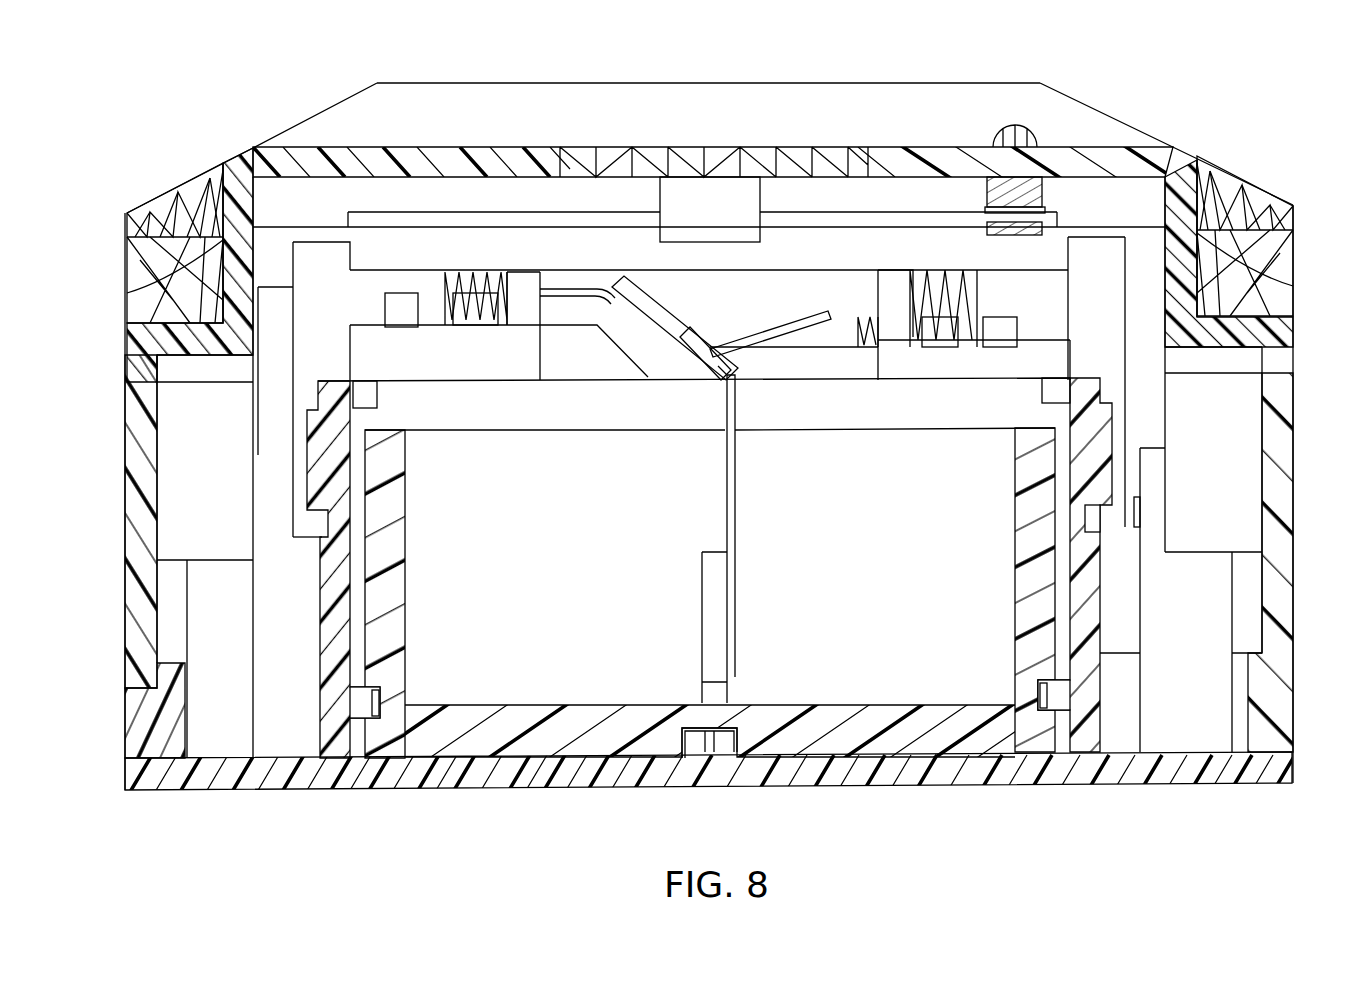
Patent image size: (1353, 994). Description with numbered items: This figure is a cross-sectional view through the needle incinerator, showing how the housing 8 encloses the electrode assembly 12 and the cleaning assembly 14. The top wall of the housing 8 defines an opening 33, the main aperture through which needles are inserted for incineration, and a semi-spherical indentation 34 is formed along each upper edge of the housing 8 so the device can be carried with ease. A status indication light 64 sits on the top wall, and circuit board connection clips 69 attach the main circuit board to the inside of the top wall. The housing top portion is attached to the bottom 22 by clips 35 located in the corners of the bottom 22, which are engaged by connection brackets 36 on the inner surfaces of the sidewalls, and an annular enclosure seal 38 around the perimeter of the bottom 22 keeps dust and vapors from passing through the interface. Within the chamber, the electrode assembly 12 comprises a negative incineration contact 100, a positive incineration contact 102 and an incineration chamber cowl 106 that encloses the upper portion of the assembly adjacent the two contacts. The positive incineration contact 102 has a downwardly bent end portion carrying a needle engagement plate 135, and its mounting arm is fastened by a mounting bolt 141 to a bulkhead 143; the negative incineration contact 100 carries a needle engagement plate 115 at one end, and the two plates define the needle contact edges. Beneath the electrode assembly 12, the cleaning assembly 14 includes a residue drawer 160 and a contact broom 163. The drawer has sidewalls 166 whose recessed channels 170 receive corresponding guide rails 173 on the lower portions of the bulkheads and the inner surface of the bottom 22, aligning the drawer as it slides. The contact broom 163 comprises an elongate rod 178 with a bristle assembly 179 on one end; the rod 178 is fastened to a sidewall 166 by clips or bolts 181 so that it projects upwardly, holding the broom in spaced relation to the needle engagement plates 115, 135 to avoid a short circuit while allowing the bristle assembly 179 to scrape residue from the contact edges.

The housing 8 is at (247, 157).
The opening 33 is at (787, 147).
The semi-spherical indentation 34 is at (1290, 176).
The status indication light 64 is at (1030, 137).
The circuit board connection clips 69 is at (762, 197).
The electrode assembly 12 is at (736, 286).
The bulkhead 143 is at (372, 340).
The incineration chamber cowl 106 is at (432, 276).
The mounting bolt 141 is at (480, 300).
The positive incineration contact 102 is at (610, 338).
The needle engagement plate 135 is at (643, 300).
The bristle assembly 179 is at (698, 339).
The needle engagement plate 115 is at (802, 322).
The negative incineration contact 100 is at (801, 353).
The cleaning assembly 14 is at (917, 421).
The residue drawer 160 is at (711, 575).
The sidewalls 166 is at (402, 503).
The contact broom 163 is at (746, 534).
The elongate rod 178 is at (736, 516).
The clips or bolts 181 is at (712, 656).
The clips 35 is at (303, 537).
The recessed channel 170 is at (386, 700).
The guide rails 173 is at (382, 712).
The connection brackets 36 is at (1135, 487).
The annular enclosure seal 38 is at (157, 677).
The bottom 22 is at (1195, 776).